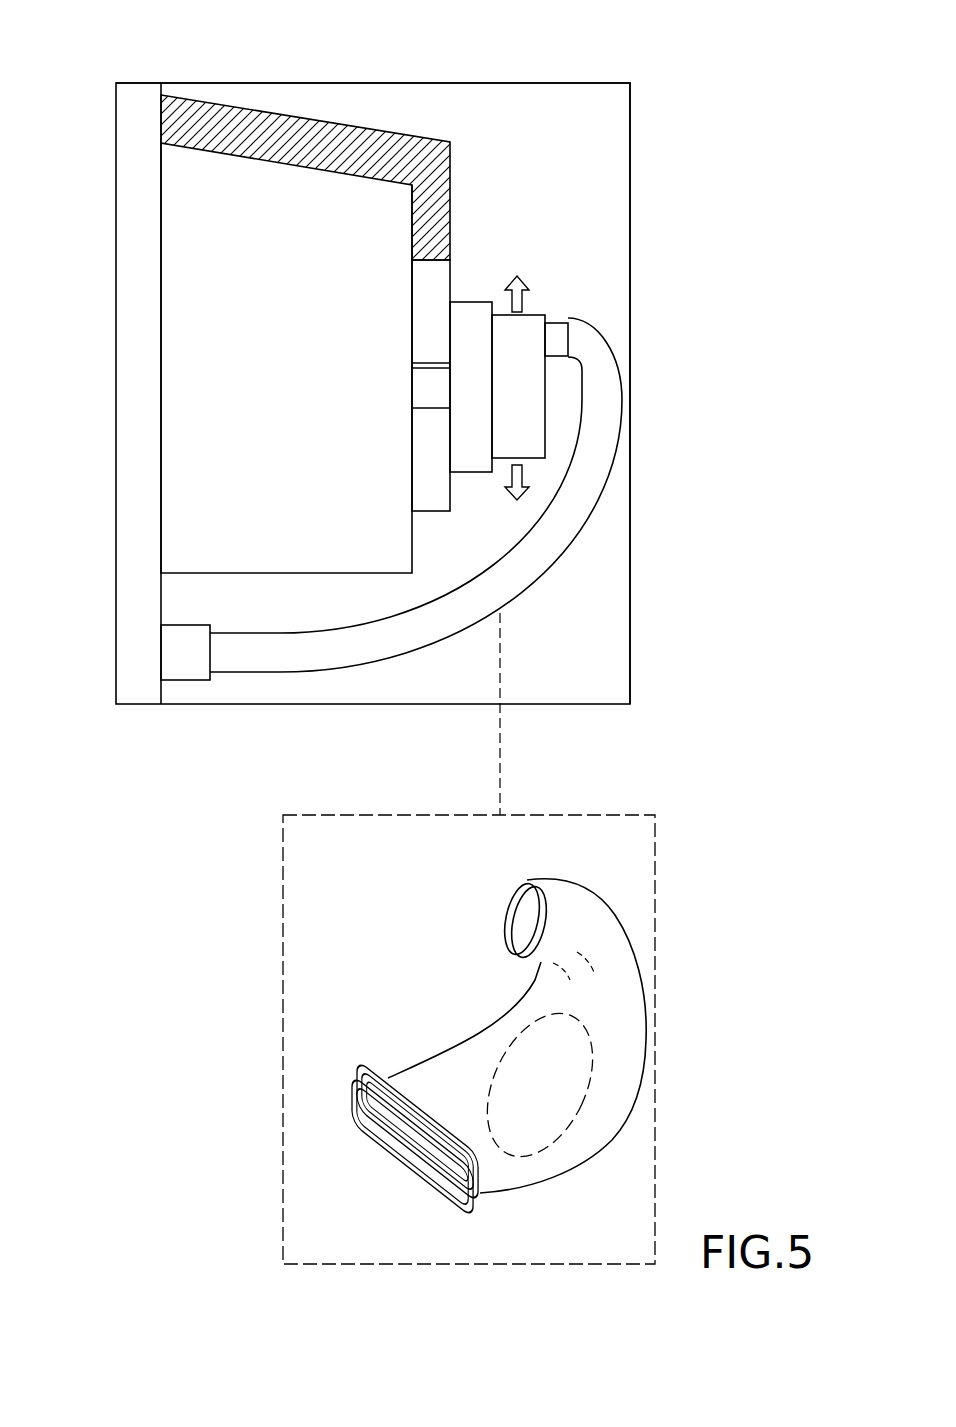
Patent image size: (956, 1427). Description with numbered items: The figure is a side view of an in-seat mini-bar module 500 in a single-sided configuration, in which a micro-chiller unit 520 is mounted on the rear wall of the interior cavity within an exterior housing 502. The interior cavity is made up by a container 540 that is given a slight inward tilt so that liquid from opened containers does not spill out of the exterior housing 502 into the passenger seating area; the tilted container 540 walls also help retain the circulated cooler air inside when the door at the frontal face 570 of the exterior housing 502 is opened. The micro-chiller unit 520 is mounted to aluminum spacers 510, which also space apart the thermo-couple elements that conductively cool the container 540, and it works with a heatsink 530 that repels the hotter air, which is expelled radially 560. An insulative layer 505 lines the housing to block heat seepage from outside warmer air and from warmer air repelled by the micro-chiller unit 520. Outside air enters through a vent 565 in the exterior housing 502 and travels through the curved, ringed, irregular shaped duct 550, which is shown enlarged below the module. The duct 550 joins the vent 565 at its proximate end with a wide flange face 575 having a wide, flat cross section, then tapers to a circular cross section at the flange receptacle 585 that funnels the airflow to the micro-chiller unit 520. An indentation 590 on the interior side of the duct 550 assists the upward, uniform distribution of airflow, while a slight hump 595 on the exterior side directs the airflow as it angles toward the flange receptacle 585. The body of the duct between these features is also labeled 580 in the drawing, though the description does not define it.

The in-seat mini-bar module 500 is at (727, 92).
The exterior housing 502 is at (525, 83).
The insulative layer 505 is at (320, 133).
The aluminum spacers 510 is at (430, 307).
The micro-chiller unit 520 is at (470, 387).
The heatsink 530 is at (503, 418).
The container 540 is at (286, 545).
The duct 550 is at (578, 497).
The radial direction 560 is at (537, 257).
The vent 565 is at (175, 647).
The frontal face 570 is at (137, 680).
The flange face 575 is at (468, 1200).
The duct body 580 is at (494, 1012).
The flange receptacle 585 is at (520, 900).
The indentation 590 is at (556, 988).
The hump 595 is at (563, 878).